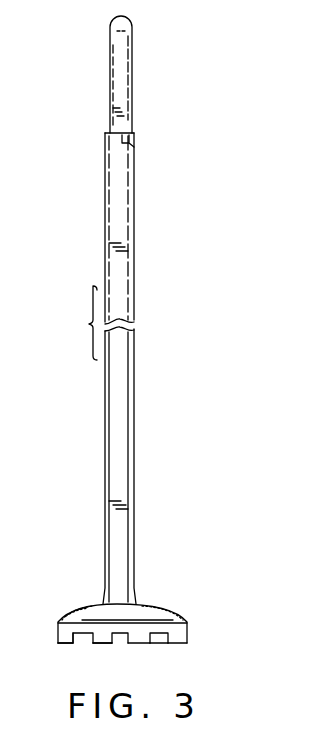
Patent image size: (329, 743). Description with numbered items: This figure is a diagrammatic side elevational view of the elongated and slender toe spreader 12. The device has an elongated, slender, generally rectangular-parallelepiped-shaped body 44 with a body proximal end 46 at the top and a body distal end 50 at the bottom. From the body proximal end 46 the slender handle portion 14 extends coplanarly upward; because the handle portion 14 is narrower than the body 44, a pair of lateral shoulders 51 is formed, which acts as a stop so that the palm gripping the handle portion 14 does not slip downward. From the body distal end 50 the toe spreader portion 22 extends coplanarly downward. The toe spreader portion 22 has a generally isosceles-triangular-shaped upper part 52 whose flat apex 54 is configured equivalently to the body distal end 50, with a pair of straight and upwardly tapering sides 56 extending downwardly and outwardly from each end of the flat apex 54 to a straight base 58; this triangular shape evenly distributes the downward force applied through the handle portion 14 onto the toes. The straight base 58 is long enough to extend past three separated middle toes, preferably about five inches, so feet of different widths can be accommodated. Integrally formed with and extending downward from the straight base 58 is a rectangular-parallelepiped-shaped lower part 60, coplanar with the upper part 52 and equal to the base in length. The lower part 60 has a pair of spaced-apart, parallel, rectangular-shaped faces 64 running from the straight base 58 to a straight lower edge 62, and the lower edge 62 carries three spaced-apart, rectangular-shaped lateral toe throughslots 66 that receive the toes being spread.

The toe spreader 12 is at (71, 300).
The toe spreader slender handle portion 14 is at (115, 57).
The toe spreader portion 22 is at (65, 601).
The toe spreader body 44 is at (118, 435).
The toe spreader body proximal end 46 is at (134, 147).
The toe spreader body distal end 50 is at (130, 601).
The handle portion pair of lateral shoulders 51 is at (107, 135).
The toe spreader portion generally isosceles-triangular-shaped upper part 52 is at (151, 606).
The toe spreader portion upper part flat apex 54 is at (107, 602).
The upper part pair of straight and upwardly tapering sides 56 is at (144, 602).
The toe spreader portion upper part straight base 58 is at (105, 609).
The toe spreader portion rectangular-parallelepiped-shaped lower part 60 is at (187, 636).
The toe spreader portion lower part straight lower edge 62 is at (60, 644).
The lower part pair of spaced-apart, parallel, rectangular-shaped faces 64 is at (60, 638).
The lateral toe throughslots 66 is at (99, 647).